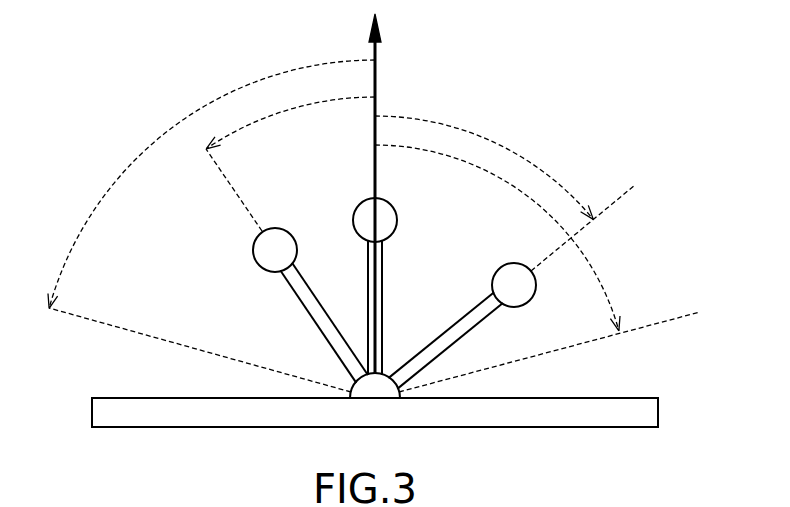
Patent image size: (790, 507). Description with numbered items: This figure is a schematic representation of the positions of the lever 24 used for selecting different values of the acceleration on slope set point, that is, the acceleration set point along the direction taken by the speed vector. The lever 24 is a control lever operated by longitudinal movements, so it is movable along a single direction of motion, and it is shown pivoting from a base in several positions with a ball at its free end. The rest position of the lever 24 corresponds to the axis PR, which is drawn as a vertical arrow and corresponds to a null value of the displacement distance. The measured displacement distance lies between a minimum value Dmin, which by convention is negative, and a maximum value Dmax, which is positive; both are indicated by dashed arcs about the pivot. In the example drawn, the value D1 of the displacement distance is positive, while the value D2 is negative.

The lever 24 is at (368, 295).
The axis P_R PR is at (372, 59).
The value D1 of the displacement distance D1 is at (483, 134).
The value D2 of the displacement distance D2 is at (265, 118).
The minimum value Dmin is at (100, 205).
The maximum value Dmax is at (602, 279).